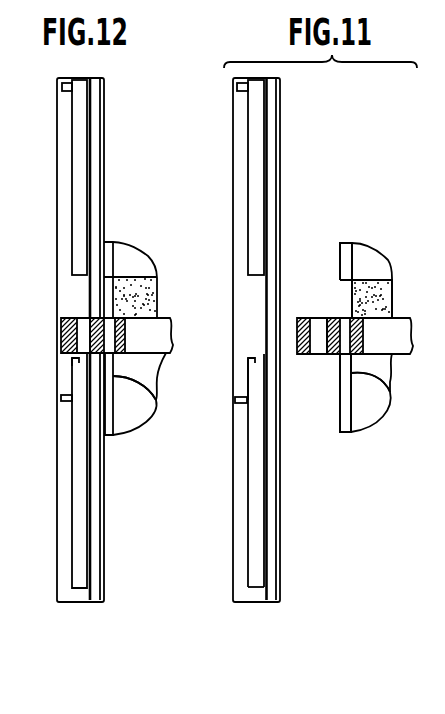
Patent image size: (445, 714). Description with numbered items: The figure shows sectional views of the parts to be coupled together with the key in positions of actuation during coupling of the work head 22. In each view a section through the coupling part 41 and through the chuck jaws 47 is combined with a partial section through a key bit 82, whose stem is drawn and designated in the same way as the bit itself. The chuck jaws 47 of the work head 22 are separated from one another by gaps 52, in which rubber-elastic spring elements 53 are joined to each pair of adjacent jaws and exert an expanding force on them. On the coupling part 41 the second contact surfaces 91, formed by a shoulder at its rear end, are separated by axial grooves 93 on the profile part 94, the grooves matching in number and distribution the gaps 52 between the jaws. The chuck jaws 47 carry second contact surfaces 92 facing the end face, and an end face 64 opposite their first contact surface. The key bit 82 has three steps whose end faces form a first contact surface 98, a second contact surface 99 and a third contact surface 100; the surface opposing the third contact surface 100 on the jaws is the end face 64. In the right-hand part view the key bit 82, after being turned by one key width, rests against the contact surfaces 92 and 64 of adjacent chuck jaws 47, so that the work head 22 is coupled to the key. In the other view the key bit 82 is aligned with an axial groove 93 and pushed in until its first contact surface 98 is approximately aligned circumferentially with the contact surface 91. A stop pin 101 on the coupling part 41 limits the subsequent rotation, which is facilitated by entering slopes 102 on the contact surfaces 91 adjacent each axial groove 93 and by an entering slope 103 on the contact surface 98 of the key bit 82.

In FIG. 11, the work head 22 is at (365, 355).
In FIG. 12, the coupling part 41 is at (77, 603).
In FIG. 11, the coupling part 41 is at (253, 603).
In FIG. 12, the chuck jaws 47 is at (142, 263).
In FIG. 11, the chuck jaws 47 is at (363, 257).
In FIG. 11, the gaps 52 is at (343, 294).
In FIG. 11, the rubber-elastic spring elements 53 is at (383, 293).
In FIG. 11, the end face 64 is at (340, 420).
In FIG. 12, the key bits 82 is at (167, 327).
In FIG. 11, the key bits 82 is at (395, 338).
In FIG. 12, the second contact surfaces 91 is at (70, 378).
In FIG. 11, the second contact surfaces 91 is at (247, 377).
In FIG. 12, the second contact surfaces 92 is at (152, 402).
In FIG. 11, the second contact surfaces 92 is at (388, 383).
In FIG. 12, the axial grooves 93 is at (77, 287).
In FIG. 11, the axial grooves 93 is at (250, 288).
In FIG. 11, the profile part 94 is at (253, 155).
In FIG. 12, the first contact surface 98 is at (80, 318).
In FIG. 11, the first contact surface 98 is at (314, 332).
In FIG. 11, the second contact surface 99 is at (343, 317).
In FIG. 11, the third contact surface 100 is at (341, 360).
In FIG. 12, the stop pin 101 is at (65, 405).
In FIG. 11, the entering slopes 102 is at (252, 358).
In FIG. 12, the entering slope 103 is at (72, 361).